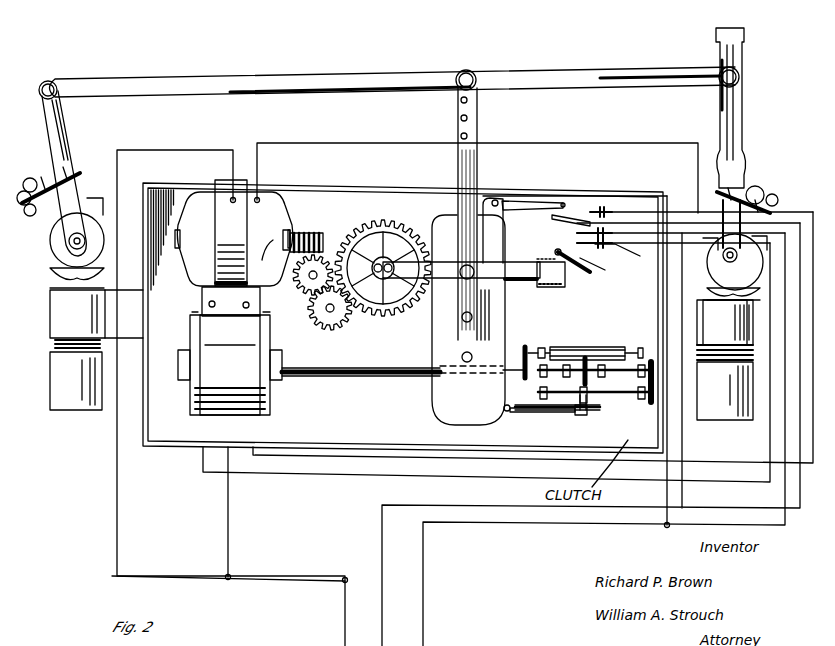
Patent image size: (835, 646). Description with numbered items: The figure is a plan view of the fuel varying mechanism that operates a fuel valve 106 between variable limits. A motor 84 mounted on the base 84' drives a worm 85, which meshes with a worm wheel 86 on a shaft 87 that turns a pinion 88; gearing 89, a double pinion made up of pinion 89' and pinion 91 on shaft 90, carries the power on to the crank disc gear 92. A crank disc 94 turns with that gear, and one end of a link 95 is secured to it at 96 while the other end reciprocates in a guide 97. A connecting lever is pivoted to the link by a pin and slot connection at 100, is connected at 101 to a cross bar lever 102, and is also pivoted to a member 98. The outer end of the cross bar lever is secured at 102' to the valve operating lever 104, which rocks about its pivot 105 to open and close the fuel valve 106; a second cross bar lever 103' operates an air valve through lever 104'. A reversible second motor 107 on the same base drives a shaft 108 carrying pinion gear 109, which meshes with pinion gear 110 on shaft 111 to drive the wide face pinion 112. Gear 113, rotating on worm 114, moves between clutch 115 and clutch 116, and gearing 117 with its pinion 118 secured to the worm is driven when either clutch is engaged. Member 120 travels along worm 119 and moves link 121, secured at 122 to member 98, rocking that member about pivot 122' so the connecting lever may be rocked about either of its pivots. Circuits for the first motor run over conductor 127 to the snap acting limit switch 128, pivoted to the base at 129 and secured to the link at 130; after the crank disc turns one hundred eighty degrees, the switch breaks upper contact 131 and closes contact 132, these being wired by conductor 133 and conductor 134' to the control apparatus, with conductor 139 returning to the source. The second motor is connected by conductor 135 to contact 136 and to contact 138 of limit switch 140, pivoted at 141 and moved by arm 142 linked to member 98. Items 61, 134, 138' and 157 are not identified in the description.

The ground line 61 is at (310, 582).
The motor 84 is at (226, 233).
The base 84' is at (212, 301).
The worm 85 is at (322, 236).
The worm wheel 86 is at (290, 233).
The shaft 87 is at (305, 300).
The pinion 88 is at (373, 256).
The gearing 89 is at (322, 317).
The pinion 89' is at (346, 338).
The shaft 90 is at (330, 332).
The pinion 91 is at (350, 323).
The crank disc gear 92 is at (418, 236).
The crank disc 94 is at (383, 270).
The link 95 is at (458, 318).
The securing point 96 is at (368, 272).
The guide 97 is at (532, 262).
The member 98 is at (440, 388).
The pin and slot connection 100 is at (500, 255).
The connection 101 is at (476, 75).
The cross bar lever 102 is at (660, 61).
The securing point 102' is at (759, 66).
The second cross bar lever 103' is at (393, 70).
The valve operating lever 104 is at (750, 108).
The lever 104' is at (76, 168).
The pivot 105 is at (722, 262).
The fuel valve 106 is at (766, 255).
The second motor 107 is at (188, 392).
The shaft 108 is at (320, 378).
The pinion gear 109 is at (522, 358).
The pinion gear 110 is at (550, 352).
The shaft 111 is at (640, 352).
The wide face pinion 112 is at (605, 338).
The gear 113 is at (622, 404).
The worm 114 is at (604, 376).
The clutch 115 is at (556, 378).
The clutch 116 is at (600, 398).
The gearing 117 is at (660, 368).
The pinion 118 is at (660, 378).
The worm 119 is at (560, 412).
The member 120 is at (575, 416).
The link 121 is at (528, 412).
The securing point 122 is at (518, 423).
The pivot 122' is at (471, 373).
The conductor 127 is at (372, 144).
The limit switch 128 is at (590, 275).
The pivot 129 is at (553, 252).
The securing point 130 is at (545, 290).
The upper contact 131 is at (610, 258).
The contact 132 is at (605, 275).
The conductor 133 is at (383, 598).
The wire 134 is at (725, 535).
The conductor 134' is at (604, 421).
The conductor 135 is at (316, 458).
The contact 136 is at (592, 212).
The contact 138 is at (648, 207).
The wire 138' is at (269, 544).
The conductor 139 is at (117, 548).
The limit switch 140 is at (560, 210).
The pivot 141 is at (578, 240).
The arm 142 is at (506, 198).
The wire 157 is at (452, 476).